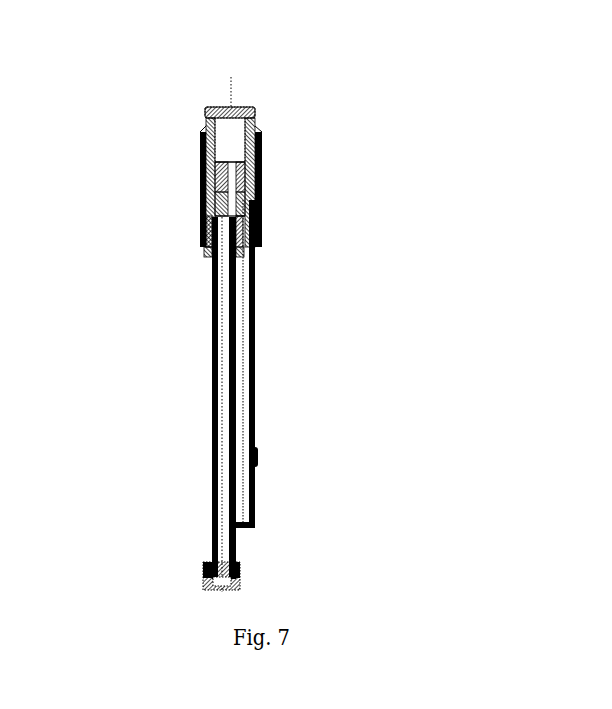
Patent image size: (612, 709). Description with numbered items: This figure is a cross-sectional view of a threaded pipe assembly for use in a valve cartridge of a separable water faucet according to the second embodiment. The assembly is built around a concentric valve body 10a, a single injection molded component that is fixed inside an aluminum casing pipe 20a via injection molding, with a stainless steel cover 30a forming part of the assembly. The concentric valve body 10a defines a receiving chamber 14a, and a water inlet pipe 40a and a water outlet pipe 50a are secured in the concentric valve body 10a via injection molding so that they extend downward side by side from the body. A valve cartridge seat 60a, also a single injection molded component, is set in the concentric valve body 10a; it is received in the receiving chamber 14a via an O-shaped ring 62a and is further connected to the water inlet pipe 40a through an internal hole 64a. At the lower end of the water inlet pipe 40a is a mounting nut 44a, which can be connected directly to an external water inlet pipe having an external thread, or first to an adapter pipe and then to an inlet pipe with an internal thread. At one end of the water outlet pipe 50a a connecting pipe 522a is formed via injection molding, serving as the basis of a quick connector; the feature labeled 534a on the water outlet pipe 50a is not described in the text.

The concentric valve body 10a is at (207, 123).
The receiving chamber 14a is at (230, 116).
The aluminum casing pipe 20a is at (204, 187).
The stainless steel cover 30a is at (205, 255).
The water inlet pipe 40a is at (211, 378).
The mounting nut 44a is at (203, 565).
The water outlet pipe 50a is at (258, 340).
The valve cartridge seat 60a is at (263, 158).
The O-shaped ring 62a is at (263, 228).
The internal hole 64a is at (263, 193).
The connecting pipe 522a is at (258, 493).
The rod protrusion 534a is at (258, 455).